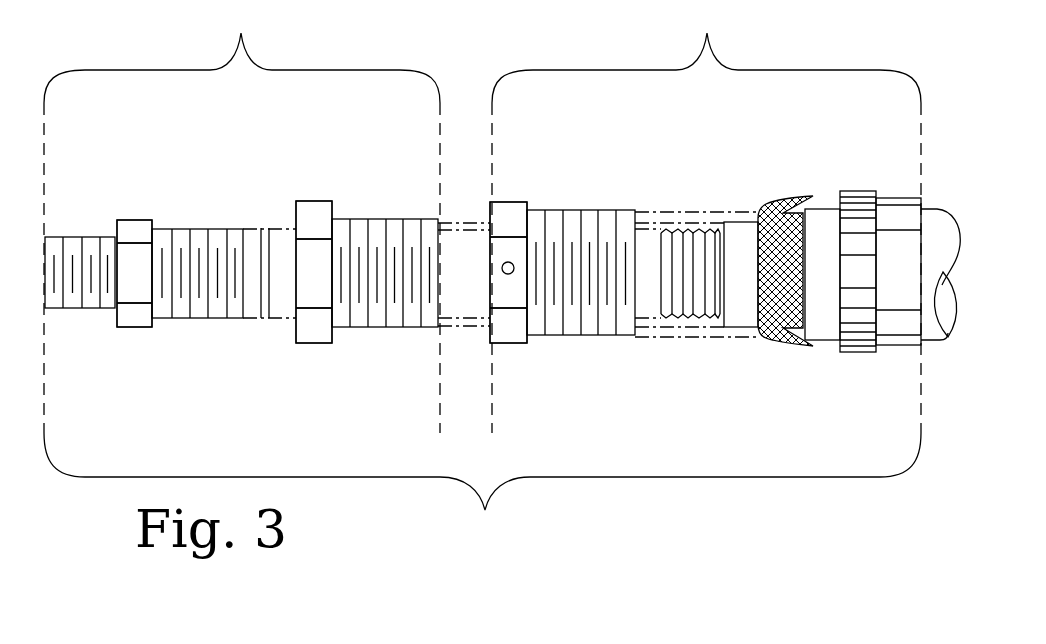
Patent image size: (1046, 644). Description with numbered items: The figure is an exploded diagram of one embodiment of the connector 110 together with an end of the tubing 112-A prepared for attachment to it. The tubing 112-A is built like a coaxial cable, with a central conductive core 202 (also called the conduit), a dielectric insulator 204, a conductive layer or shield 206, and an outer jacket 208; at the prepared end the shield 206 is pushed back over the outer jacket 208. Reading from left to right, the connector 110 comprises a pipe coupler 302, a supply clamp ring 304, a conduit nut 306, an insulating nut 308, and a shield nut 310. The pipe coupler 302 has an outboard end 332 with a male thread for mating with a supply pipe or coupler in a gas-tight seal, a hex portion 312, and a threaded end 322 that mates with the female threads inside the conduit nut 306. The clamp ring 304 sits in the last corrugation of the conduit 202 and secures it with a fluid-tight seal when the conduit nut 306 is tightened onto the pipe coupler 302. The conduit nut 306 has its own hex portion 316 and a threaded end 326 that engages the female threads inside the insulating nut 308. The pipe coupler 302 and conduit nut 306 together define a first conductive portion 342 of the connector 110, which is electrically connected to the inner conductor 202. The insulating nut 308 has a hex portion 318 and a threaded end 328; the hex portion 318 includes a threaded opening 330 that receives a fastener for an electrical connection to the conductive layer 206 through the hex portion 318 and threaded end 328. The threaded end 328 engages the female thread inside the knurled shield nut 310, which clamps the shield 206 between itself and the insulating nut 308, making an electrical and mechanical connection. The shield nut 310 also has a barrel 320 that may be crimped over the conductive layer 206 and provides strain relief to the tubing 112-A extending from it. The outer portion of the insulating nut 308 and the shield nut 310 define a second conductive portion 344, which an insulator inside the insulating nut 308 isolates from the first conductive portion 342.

The connector 110 is at (482, 488).
The tubing 112-A is at (655, 367).
The conductive core 202 is at (702, 229).
The dielectric insulator 204 is at (740, 327).
The conductive layer 206 is at (797, 203).
The outer jacket 208 is at (822, 209).
The pipe coupler 302 is at (133, 327).
The supply clamp ring 304 is at (262, 318).
The conduit nut 306 is at (316, 343).
The insulating nut 308 is at (512, 343).
The shield nut 310 is at (862, 352).
The hex portion 312 is at (133, 220).
The hex portion 316 is at (312, 201).
The hex portion 318 is at (507, 202).
The barrel 320 is at (903, 345).
The threaded end 322 is at (200, 229).
The threaded end 326 is at (375, 219).
The threaded end 328 is at (573, 210).
The threaded opening 330 is at (508, 275).
The outboard end 332 is at (108, 237).
The first conductive portion 342 is at (242, 220).
The second conductive portion 344 is at (706, 220).